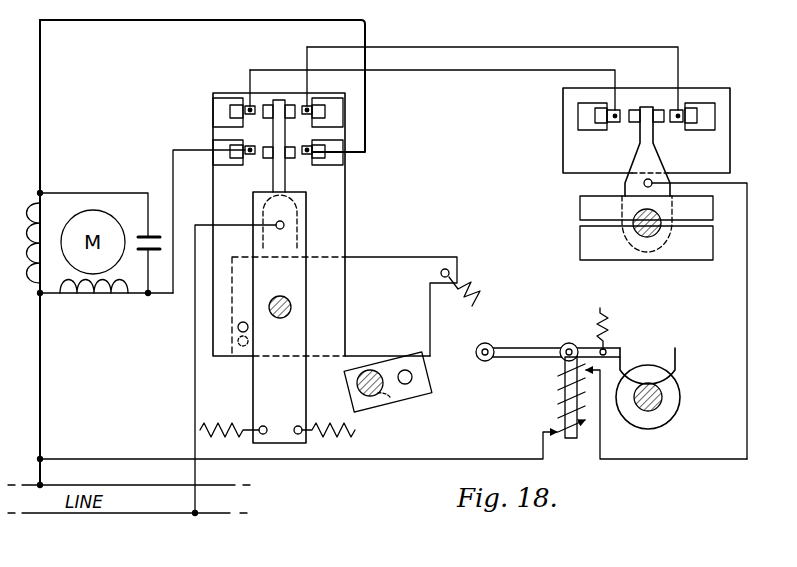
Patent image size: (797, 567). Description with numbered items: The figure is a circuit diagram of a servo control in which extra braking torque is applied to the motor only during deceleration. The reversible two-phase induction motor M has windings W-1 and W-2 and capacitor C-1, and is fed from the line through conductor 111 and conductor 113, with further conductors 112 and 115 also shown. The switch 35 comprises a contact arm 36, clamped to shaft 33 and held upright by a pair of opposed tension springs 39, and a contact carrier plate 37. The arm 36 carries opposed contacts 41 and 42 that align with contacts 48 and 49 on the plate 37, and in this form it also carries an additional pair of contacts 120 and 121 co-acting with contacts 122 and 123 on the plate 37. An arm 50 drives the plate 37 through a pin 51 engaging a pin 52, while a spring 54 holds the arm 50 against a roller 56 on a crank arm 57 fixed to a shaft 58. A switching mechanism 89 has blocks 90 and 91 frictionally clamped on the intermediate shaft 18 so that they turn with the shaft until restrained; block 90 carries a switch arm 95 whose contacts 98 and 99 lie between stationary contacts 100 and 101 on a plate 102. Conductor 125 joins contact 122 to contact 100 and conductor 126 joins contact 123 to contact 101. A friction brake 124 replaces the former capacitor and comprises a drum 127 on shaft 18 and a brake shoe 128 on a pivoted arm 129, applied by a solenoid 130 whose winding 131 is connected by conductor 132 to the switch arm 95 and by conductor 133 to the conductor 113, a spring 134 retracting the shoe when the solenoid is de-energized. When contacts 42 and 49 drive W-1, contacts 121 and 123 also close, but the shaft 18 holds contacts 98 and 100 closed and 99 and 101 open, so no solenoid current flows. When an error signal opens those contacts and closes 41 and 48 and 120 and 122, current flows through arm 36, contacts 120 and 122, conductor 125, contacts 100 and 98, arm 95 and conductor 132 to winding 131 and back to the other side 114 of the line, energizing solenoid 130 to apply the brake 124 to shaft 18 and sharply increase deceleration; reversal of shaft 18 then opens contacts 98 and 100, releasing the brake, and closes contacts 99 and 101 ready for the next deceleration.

The intermediate shaft 18 is at (646, 408).
The shaft 33 is at (284, 296).
The switch 35 is at (358, 242).
The contact arm 36 is at (300, 340).
The contact carrier plate 37 is at (345, 207).
The tension springs 39 is at (233, 424).
The contact 41 is at (268, 160).
The contact 42 is at (290, 160).
The contact 48 is at (243, 165).
The contact 49 is at (335, 162).
The arm 50 is at (399, 268).
The pin 51 is at (233, 356).
The pin 52 is at (238, 331).
The spring 54 is at (487, 300).
The roller 56 is at (428, 384).
The crank arm 57 is at (372, 400).
The shaft 58 is at (418, 404).
The switching mechanism 89 is at (605, 184).
The block 90 is at (580, 213).
The block 91 is at (580, 248).
The switch arm 95 is at (640, 166).
The contact 98 is at (630, 106).
The contact 99 is at (657, 106).
The contact 100 is at (616, 124).
The contact 101 is at (677, 124).
The stationary plate 102 is at (730, 137).
The conductor 111 is at (195, 378).
The line conductor 112 is at (165, 20).
The conductor 113 is at (40, 376).
The side of the line 114 is at (168, 470).
The conductor 115 is at (173, 172).
The contact 120 is at (262, 93).
The contact 121 is at (297, 75).
The contact 122 is at (247, 120).
The contact 123 is at (314, 125).
The friction brake 124 is at (686, 380).
The conductor 125 is at (452, 72).
The conductor 126 is at (492, 48).
The drum 127 is at (686, 408).
The brake shoe 128 is at (677, 346).
The pivoted arm 129 is at (536, 350).
The solenoid 130 is at (556, 385).
The solenoid winding 131 is at (556, 416).
The conductor 132 is at (747, 291).
The conductor 133 is at (396, 465).
The spring 134 is at (615, 326).
The capacitor C-1 is at (158, 235).
The motor winding W-1 is at (35, 268).
The motor winding W-2 is at (100, 300).